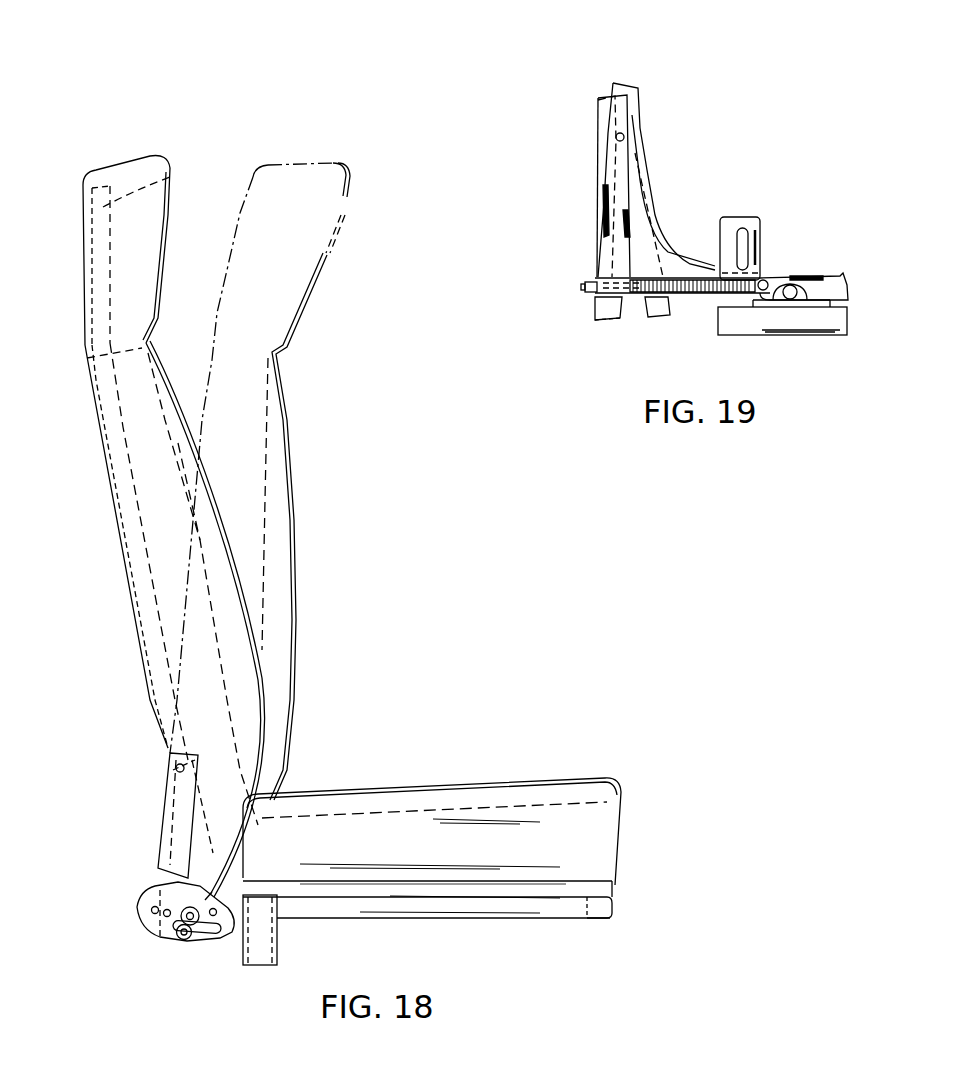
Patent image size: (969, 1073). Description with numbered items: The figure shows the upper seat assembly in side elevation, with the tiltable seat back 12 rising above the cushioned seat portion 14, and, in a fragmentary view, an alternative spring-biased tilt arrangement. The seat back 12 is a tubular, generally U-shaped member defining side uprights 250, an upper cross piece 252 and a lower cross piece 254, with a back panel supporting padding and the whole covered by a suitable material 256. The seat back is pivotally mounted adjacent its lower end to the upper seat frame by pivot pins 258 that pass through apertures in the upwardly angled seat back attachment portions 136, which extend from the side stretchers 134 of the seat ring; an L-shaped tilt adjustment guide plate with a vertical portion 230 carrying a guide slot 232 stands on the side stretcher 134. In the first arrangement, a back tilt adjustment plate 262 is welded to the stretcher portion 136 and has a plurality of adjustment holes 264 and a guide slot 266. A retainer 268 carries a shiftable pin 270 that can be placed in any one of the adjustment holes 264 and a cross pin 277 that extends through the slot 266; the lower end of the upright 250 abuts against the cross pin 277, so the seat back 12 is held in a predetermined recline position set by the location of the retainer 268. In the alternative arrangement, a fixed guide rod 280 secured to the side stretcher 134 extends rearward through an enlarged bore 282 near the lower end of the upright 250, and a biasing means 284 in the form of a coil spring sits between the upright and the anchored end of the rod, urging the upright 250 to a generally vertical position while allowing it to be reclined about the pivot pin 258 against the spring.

In FIG. 18, the seat back 12 is at (190, 207).
In FIG. 18, the cushioned seat portion 14 is at (530, 765).
In FIG. 18, the side stretcher 134 is at (497, 903).
In FIG. 19, the side stretcher 134 is at (823, 283).
In FIG. 18, the seat back attachment portion 136 is at (182, 776).
In FIG. 19, the seat back attachment portion 136 is at (623, 150).
In FIG. 19, the vertical portion 230 is at (762, 232).
In FIG. 19, the guide slot 232 is at (743, 228).
In FIG. 18, the side upright 250 is at (108, 178).
In FIG. 19, the side upright 250 is at (638, 93).
In FIG. 18, the upper cross piece 252 is at (153, 180).
In FIG. 18, the lower cross piece 254 is at (170, 837).
In FIG. 18, the covering material 256 is at (178, 443).
In FIG. 18, the pivot pin 258 is at (176, 768).
In FIG. 19, the pivot pin 258 is at (616, 140).
In FIG. 18, the back tilt adjustment plate 262 is at (160, 897).
In FIG. 18, the adjustment holes 264 is at (164, 915).
In FIG. 18, the guide slot 266 is at (162, 941).
In FIG. 18, the retainer 268 is at (212, 894).
In FIG. 18, the shiftable pin 270 is at (217, 913).
In FIG. 18, the cross pin 277 is at (187, 934).
In FIG. 19, the fixed guide rod 280 is at (586, 290).
In FIG. 19, the enlarged bore 282 is at (600, 320).
In FIG. 19, the biasing means 284 is at (667, 276).